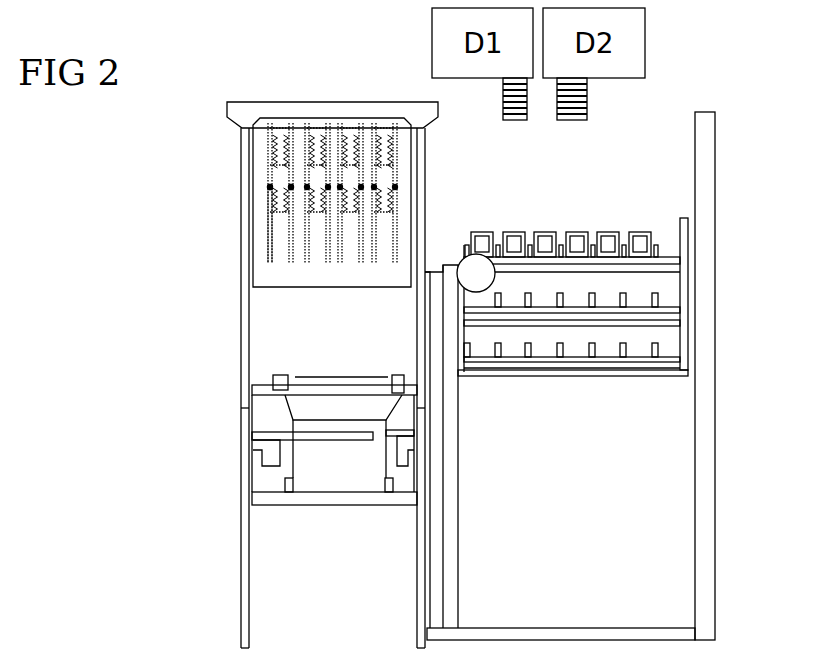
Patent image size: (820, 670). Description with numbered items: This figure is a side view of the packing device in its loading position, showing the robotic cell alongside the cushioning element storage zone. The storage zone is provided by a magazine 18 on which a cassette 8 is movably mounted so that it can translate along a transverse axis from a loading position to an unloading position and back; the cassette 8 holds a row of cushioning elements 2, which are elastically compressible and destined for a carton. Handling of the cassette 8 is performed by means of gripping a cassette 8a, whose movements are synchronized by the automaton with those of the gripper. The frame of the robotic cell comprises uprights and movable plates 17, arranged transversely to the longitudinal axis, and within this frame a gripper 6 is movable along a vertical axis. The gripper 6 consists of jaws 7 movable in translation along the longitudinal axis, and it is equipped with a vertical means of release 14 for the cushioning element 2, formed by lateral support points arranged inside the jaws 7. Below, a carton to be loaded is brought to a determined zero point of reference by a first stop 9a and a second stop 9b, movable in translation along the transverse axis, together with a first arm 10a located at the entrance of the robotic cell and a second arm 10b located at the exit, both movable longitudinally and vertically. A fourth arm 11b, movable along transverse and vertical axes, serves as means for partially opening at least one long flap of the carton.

The cushioning element 2 is at (474, 225).
The gripper 6 is at (262, 195).
The jaws 7 is at (270, 205).
The cassette 8 is at (668, 243).
The means of gripping a cassette 8a is at (474, 292).
The first stop 9a is at (388, 495).
The second stop 9b is at (287, 494).
The first arm 10a is at (400, 441).
The second arm 10b is at (280, 441).
The fourth arm 11b is at (270, 387).
The vertical means of release 14 is at (277, 136).
The plates 17 is at (410, 152).
The magazine 18 is at (712, 150).